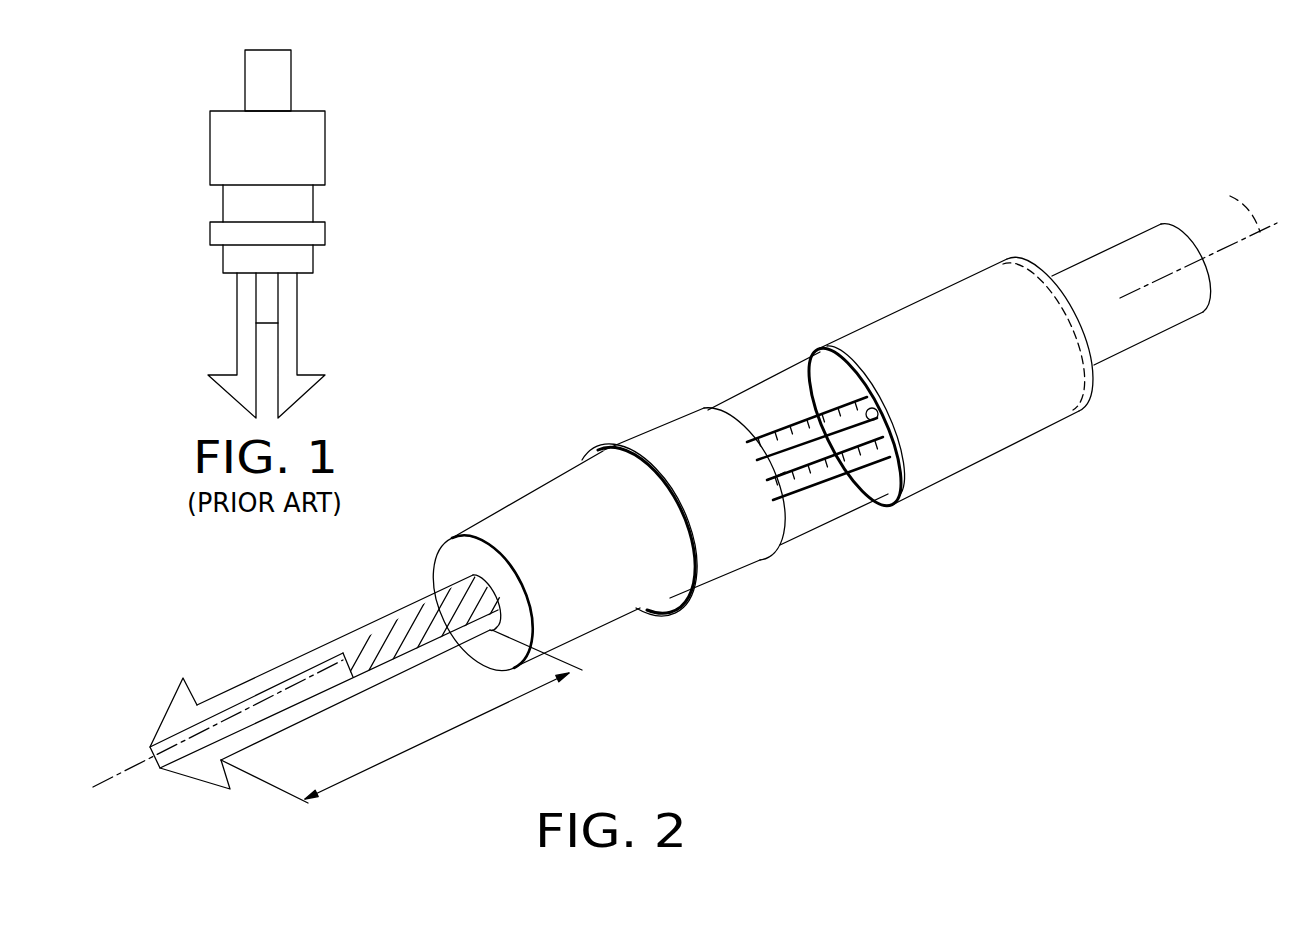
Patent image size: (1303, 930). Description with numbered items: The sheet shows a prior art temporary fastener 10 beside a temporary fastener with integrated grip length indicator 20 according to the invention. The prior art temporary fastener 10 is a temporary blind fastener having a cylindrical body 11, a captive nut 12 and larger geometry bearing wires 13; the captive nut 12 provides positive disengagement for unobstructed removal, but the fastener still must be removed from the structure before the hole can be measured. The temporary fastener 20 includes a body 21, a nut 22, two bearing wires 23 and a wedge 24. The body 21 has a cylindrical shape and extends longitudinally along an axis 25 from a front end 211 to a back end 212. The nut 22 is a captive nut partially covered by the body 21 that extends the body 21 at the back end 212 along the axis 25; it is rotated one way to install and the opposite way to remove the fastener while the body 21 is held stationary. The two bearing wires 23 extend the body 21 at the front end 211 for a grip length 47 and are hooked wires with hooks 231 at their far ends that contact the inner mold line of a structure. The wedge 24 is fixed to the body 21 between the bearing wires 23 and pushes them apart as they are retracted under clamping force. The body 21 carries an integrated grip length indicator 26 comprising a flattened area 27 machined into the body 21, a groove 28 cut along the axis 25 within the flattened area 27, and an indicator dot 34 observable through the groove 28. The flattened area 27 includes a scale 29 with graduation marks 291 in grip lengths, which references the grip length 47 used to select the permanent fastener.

In FIG. 1, the temporary fastener 10 is at (230, 214).
In FIG. 1, the cylindrical body 11 is at (223, 146).
In FIG. 1, the captive nut 12 is at (280, 78).
In FIG. 1, the bearing wires 13 is at (243, 308).
In FIG. 2, the temporary fastener with integrated grip length indicator 20 is at (685, 510).
In FIG. 2, the body 21 is at (999, 364).
In FIG. 2, the nut 22 is at (1125, 242).
In FIG. 2, the bearing wires 23 is at (282, 668).
In FIG. 2, the wedge 24 is at (407, 622).
In FIG. 2, the axis 25 is at (1223, 192).
In FIG. 2, the grip length indicator 26 is at (781, 336).
In FIG. 2, the flattened area 27 is at (832, 397).
In FIG. 2, the groove 28 is at (828, 438).
In FIG. 2, the scale 29 is at (790, 422).
In FIG. 2, the indicator dot 34 is at (880, 411).
In FIG. 2, the grip length 47 is at (440, 735).
In FIG. 2, the front end 211 is at (495, 650).
In FIG. 2, the back end 212 is at (1097, 373).
In FIG. 2, the hooks 231 is at (178, 696).
In FIG. 2, the graduation marks 291 is at (785, 468).